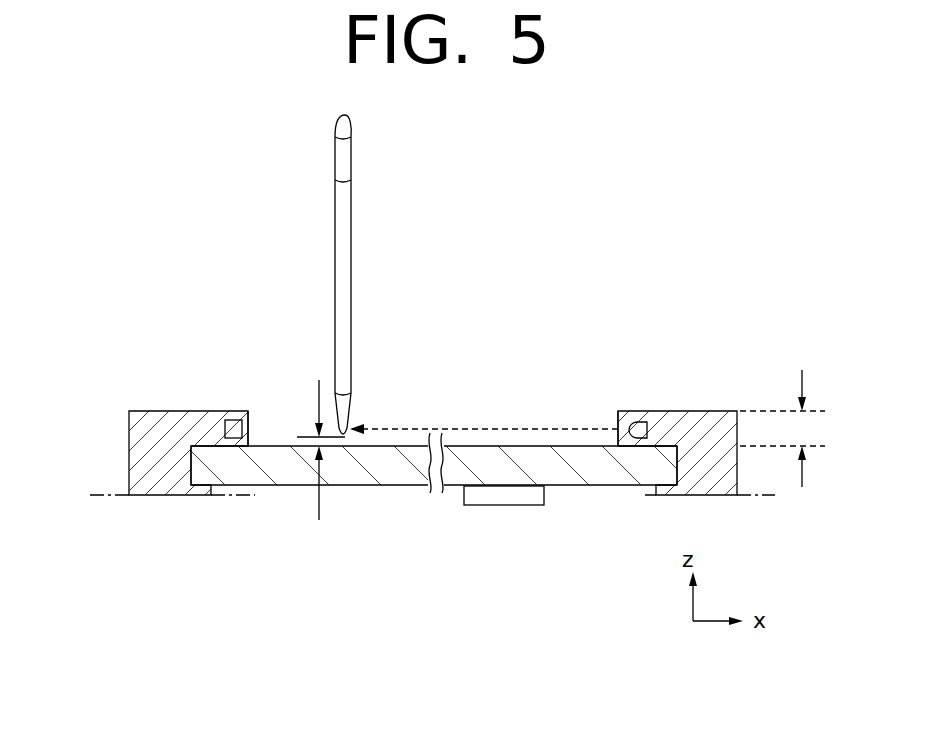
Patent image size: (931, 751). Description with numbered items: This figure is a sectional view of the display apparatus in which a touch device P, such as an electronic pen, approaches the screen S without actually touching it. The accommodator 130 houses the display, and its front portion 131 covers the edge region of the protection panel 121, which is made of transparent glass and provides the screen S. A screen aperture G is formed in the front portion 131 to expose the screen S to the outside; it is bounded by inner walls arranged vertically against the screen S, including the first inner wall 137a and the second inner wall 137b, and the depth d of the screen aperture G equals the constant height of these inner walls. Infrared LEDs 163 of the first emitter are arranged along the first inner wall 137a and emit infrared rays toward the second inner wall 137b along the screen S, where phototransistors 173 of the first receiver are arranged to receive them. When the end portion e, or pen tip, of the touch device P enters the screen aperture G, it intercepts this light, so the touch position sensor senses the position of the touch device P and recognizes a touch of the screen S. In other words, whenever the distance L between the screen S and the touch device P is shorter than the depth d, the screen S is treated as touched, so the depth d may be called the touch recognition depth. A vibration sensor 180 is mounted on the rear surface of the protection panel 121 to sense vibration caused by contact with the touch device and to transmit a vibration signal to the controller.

The accommodator 130 is at (391, 422).
The front portion 131 is at (157, 422).
The protection panel 121 is at (573, 482).
The vibration sensor 180 is at (502, 498).
The phototransistors 173 is at (232, 426).
The infrared LEDs 163 is at (641, 430).
The first inner wall 137a is at (616, 428).
The second inner wall 137b is at (250, 433).
The touch device P is at (345, 253).
The end portion e is at (352, 420).
The screen S is at (413, 446).
The screen aperture G is at (496, 424).
The distance L is at (328, 450).
The depth d is at (782, 428).